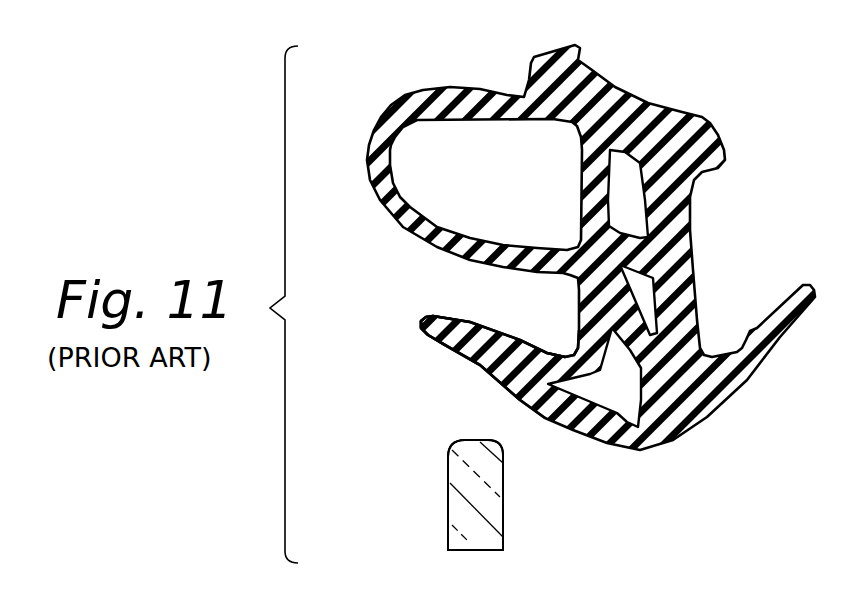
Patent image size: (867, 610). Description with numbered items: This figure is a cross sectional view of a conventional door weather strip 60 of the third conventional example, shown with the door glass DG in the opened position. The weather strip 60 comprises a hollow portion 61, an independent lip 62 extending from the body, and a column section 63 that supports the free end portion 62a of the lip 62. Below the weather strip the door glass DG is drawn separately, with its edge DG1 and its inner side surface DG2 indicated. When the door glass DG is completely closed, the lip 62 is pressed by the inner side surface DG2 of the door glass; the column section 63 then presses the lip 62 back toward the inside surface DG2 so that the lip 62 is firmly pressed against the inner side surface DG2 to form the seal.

The weather strip 60 is at (660, 79).
The hollow portion 61 is at (507, 182).
The independent lip 62 is at (473, 363).
The free end portion of the lip 62a is at (440, 315).
The column section 63 is at (578, 349).
The door glass DG is at (463, 543).
The door glass edge DG1 is at (463, 440).
The inner side surface of the door glass DG2 is at (503, 520).